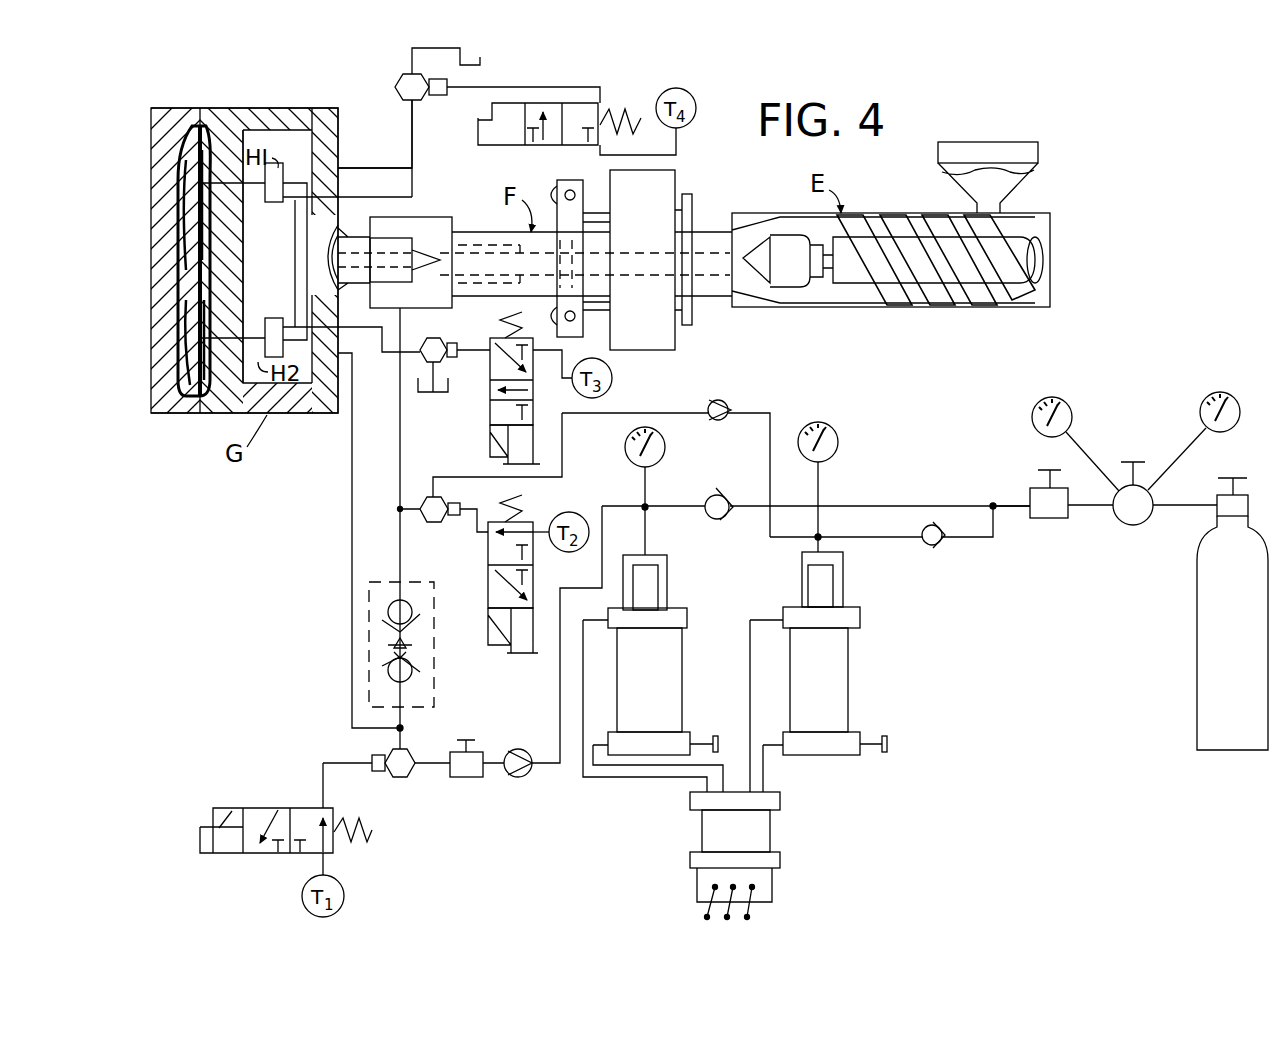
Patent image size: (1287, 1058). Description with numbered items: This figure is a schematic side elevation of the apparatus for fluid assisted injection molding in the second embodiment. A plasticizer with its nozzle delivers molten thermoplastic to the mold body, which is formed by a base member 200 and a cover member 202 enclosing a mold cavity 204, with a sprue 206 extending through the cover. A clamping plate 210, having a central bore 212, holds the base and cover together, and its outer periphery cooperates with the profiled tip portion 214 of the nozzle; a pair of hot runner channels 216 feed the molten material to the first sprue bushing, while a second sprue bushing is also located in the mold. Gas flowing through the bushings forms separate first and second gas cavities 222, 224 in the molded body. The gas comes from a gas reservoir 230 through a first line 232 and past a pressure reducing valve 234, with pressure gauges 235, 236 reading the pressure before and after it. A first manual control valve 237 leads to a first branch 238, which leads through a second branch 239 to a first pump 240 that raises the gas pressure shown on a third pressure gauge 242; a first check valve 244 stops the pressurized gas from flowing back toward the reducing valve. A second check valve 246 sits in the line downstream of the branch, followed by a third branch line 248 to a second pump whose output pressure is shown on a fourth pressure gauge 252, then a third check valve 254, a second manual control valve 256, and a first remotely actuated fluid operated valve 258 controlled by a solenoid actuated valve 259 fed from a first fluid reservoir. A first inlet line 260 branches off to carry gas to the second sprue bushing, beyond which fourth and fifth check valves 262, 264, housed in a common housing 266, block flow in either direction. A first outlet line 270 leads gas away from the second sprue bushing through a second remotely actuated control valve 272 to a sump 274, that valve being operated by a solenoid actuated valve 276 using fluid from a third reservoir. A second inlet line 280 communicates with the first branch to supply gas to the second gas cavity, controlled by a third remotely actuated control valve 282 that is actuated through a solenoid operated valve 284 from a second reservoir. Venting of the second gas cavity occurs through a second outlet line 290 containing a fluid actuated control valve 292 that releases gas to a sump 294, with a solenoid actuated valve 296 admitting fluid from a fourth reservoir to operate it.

The base member 200 is at (190, 414).
The cover member 202 is at (256, 108).
The mold cavity 204 is at (178, 271).
The sprue 206 is at (258, 297).
The clamping plate 210 is at (330, 414).
The central bore 212 is at (322, 277).
The profiled tip portion 214 is at (345, 212).
The hot runner channels 216 is at (293, 182).
The first gas cavity 222 is at (176, 355).
The second gas cavity 224 is at (178, 168).
The gas reservoir 230 is at (1200, 731).
The first line 232 is at (1177, 513).
The pressure reducing valve 234 is at (1120, 522).
The pressure gauge 235 is at (1234, 394).
The pressure gauge 236 is at (1072, 400).
The first manual control valve 237 is at (1037, 497).
The first branch 238 is at (975, 540).
The second branch 239 is at (812, 543).
The first pump 240 is at (840, 680).
The third pressure gauge 242 is at (841, 402).
The first check valve 244 is at (933, 546).
The second check valve 246 is at (724, 520).
The third branch line 248 is at (647, 538).
The fourth pressure gauge 252 is at (665, 449).
The third check valve 254 is at (528, 780).
The second manual control valve 256 is at (470, 779).
The first remotely actuated fluid operated valve 258 is at (400, 779).
The solenoid actuated valve 259 is at (270, 857).
The first inlet line 260 is at (352, 711).
The fourth check valve 262 is at (390, 676).
The fifth check valve 264 is at (390, 608).
The common housing 266 is at (366, 586).
The first outlet line 270 is at (410, 352).
The second remotely actuated control valve 272 is at (426, 342).
The sump 274 is at (452, 382).
The solenoid actuated valve 276 is at (488, 418).
The second inlet line 280 is at (415, 212).
The third remotely actuated control valve 282 is at (441, 518).
The solenoid operated valve 284 is at (484, 597).
The second outlet line 290 is at (404, 166).
The remotely controlled fluid actuated control valve 292 is at (405, 98).
The sump 294 is at (483, 63).
The solenoid actuated valve 296 is at (584, 138).